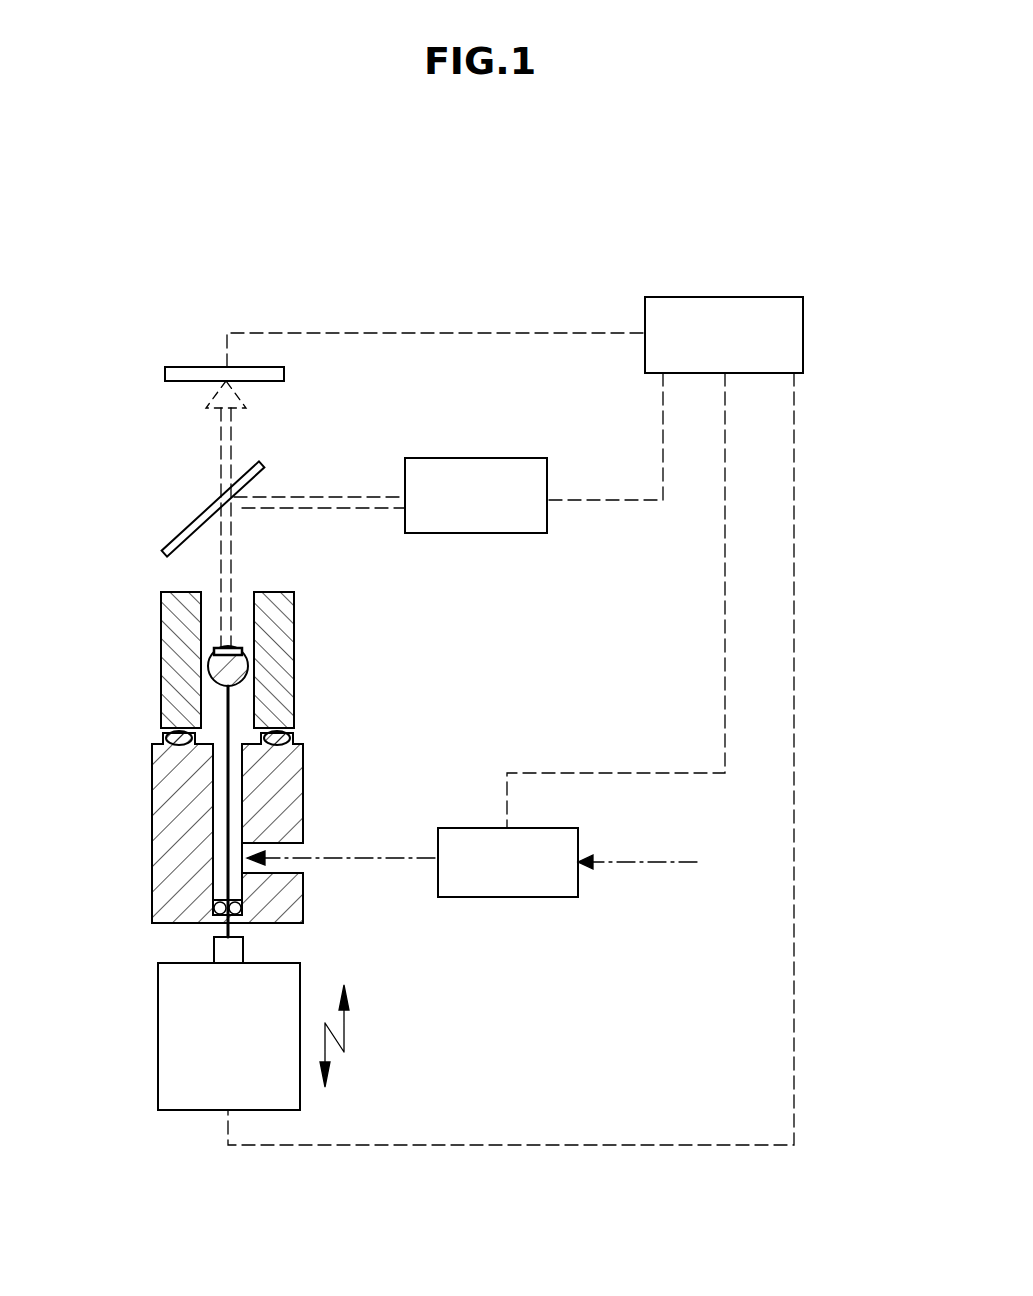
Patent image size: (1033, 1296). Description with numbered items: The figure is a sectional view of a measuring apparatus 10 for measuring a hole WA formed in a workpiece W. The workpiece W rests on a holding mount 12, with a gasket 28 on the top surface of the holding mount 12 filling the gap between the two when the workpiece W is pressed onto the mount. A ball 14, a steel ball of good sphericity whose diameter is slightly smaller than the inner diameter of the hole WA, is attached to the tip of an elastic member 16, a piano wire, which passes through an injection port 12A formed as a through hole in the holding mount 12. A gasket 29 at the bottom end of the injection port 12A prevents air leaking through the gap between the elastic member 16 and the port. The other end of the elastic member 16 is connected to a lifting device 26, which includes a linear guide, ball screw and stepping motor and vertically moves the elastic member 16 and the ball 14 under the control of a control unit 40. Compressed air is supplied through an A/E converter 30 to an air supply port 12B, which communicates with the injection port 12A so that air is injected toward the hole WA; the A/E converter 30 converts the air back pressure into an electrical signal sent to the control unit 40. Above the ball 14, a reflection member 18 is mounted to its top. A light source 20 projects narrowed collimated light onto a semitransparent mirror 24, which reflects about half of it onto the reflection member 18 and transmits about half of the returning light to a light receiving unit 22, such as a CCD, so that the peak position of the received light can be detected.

The measuring apparatus 10 is at (555, 232).
The holding mount 12 is at (161, 798).
The injection port 12A is at (235, 733).
The air supply port 12B is at (312, 853).
The ball 14 is at (248, 670).
The elastic member 16 is at (236, 810).
The reflection member 18 is at (236, 650).
The light source 20 is at (533, 458).
The light receiving unit 22 is at (172, 371).
The semitransparent mirror 24 is at (188, 527).
The lifting device 26 is at (167, 1088).
The gasket 28 is at (162, 735).
The gasket 29 is at (217, 905).
The A/E converter 30 is at (553, 897).
The control unit 40 is at (772, 297).
The workpiece W is at (165, 633).
The hole WA is at (240, 589).